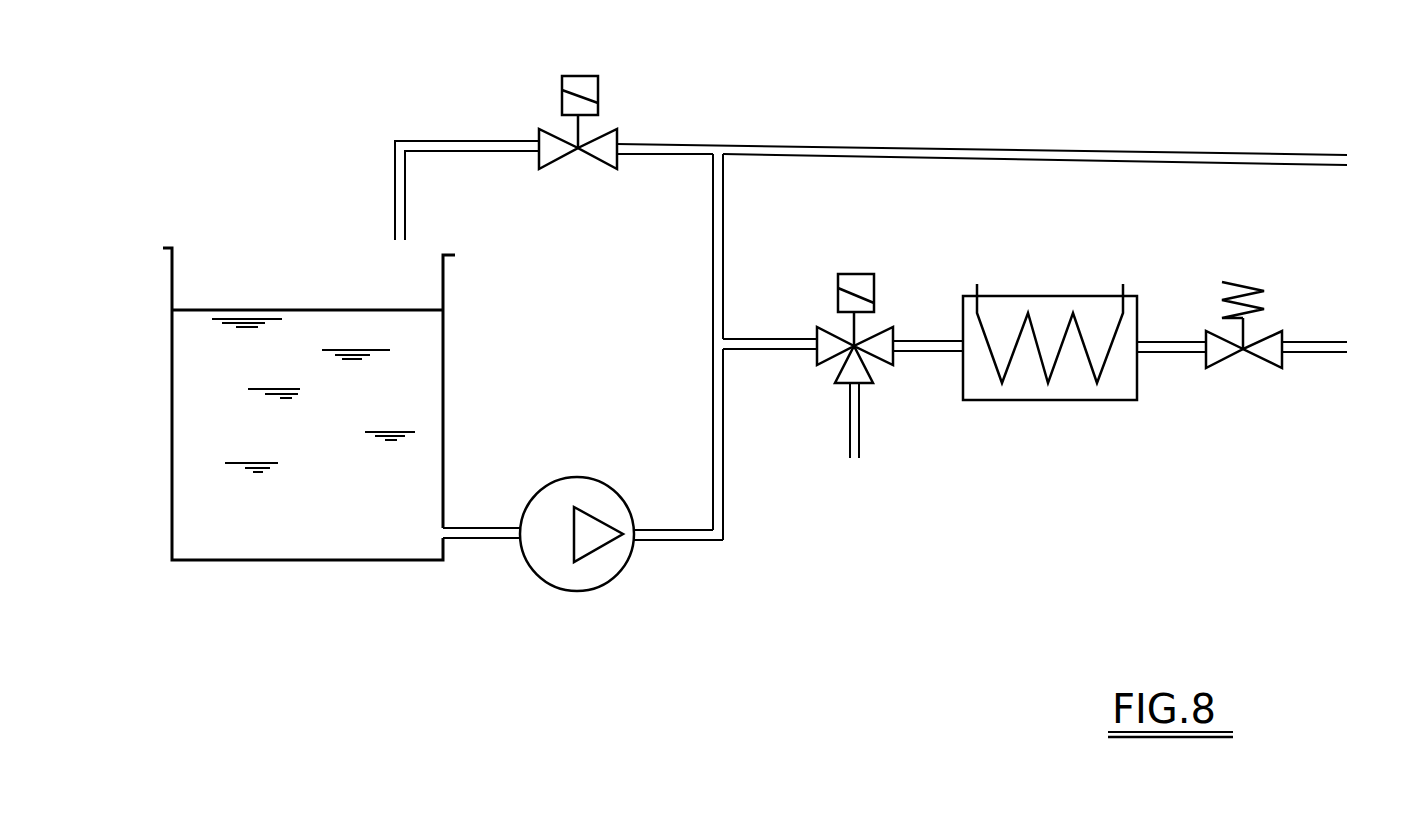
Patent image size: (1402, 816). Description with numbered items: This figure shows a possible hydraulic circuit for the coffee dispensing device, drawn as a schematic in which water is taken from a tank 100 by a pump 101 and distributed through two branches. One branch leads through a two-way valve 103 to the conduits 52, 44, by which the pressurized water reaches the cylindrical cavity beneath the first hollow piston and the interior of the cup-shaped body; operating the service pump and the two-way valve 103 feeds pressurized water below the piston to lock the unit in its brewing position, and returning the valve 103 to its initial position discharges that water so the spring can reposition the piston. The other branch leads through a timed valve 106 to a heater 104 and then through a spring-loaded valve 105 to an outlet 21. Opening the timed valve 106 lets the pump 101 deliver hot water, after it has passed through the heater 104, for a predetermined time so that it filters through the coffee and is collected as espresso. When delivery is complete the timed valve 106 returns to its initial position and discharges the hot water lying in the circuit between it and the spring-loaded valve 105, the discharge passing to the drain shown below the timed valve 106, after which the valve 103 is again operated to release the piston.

The tank / reservoir 100 is at (398, 562).
The pump 101 is at (618, 575).
The two-way valve 103 is at (598, 90).
The timed valve 106 is at (874, 278).
The heater 104 is at (1110, 403).
The spring-loaded valve 105 is at (1262, 368).
The outlet line 21 is at (1320, 355).
The conduit 52 is at (982, 111).
The conduit 44 is at (1262, 155).